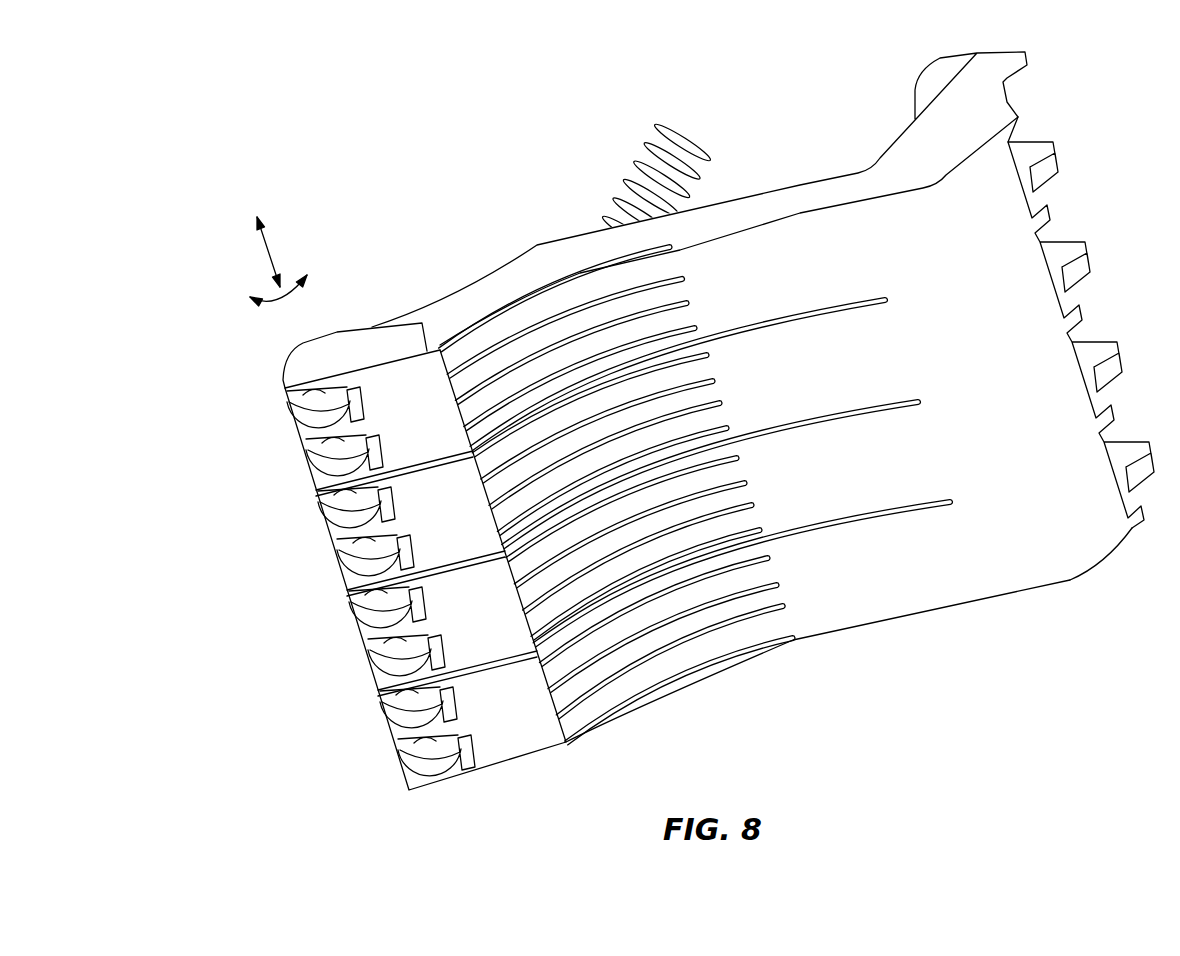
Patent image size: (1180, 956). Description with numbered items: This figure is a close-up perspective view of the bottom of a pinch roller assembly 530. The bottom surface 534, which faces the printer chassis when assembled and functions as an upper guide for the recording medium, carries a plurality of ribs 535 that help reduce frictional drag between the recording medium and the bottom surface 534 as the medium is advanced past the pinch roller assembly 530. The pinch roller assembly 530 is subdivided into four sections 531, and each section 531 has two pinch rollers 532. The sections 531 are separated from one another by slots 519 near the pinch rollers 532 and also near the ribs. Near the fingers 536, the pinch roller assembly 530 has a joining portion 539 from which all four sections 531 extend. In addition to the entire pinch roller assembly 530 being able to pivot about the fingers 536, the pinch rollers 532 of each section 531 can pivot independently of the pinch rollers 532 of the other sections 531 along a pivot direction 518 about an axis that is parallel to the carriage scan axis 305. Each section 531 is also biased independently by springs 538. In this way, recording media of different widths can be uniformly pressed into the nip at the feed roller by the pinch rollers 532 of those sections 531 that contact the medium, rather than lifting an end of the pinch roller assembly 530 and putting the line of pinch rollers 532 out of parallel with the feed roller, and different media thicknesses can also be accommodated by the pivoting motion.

The pinch roller assembly 530 is at (302, 107).
The sections 531 is at (505, 330).
The pinch rollers 532 is at (417, 727).
The bottom surface 534 is at (890, 600).
The ribs 535 is at (570, 313).
The fingers 536 is at (1055, 148).
The springs 538 is at (644, 143).
The joining portion 539 is at (1030, 547).
The slots 519 is at (826, 305).
The carriage scan axis 305 is at (268, 250).
The pivot direction 518 is at (278, 306).